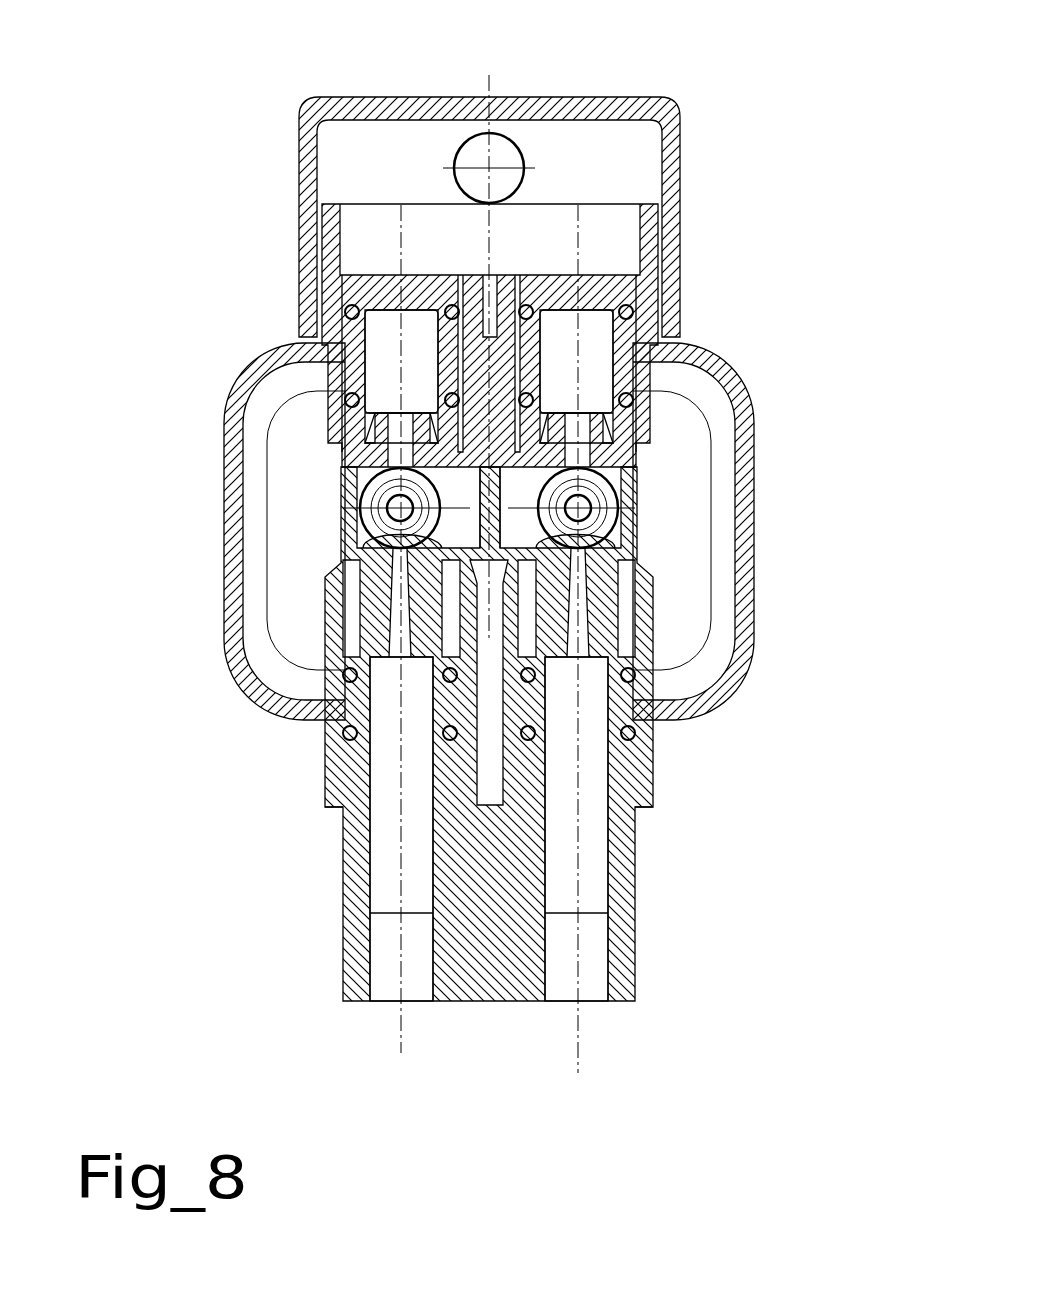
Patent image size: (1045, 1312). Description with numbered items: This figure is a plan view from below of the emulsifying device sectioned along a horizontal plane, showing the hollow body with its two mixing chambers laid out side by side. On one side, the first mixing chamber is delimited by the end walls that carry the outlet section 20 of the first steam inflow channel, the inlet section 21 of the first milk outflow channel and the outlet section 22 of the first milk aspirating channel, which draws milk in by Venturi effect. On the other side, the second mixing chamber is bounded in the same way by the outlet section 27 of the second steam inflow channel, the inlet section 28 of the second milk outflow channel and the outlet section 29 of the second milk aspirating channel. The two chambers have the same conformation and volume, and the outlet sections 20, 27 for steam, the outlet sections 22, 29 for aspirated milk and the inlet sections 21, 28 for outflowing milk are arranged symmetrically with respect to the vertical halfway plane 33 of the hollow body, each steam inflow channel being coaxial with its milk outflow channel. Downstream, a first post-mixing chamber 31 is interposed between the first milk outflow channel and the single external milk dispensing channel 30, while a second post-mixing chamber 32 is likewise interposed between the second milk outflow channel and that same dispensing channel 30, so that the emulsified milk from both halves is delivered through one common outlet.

The outlet section of the first steam inflow channel 20 is at (655, 725).
The inlet section of the first milk outflow channel 21 is at (597, 447).
The outlet section of the first milk aspirating channel 22 is at (587, 497).
The outlet section of the second steam inflow channel 27 is at (400, 530).
The inlet section of the second milk outflow channel 28 is at (400, 465).
The outlet section of the second milk aspirating channel 29 is at (385, 512).
The external milk dispensing channel 30 is at (490, 152).
The first post-mixing chamber 31 is at (590, 352).
The second post-mixing chamber 32 is at (400, 360).
The vertical halfway plane 33 is at (480, 500).